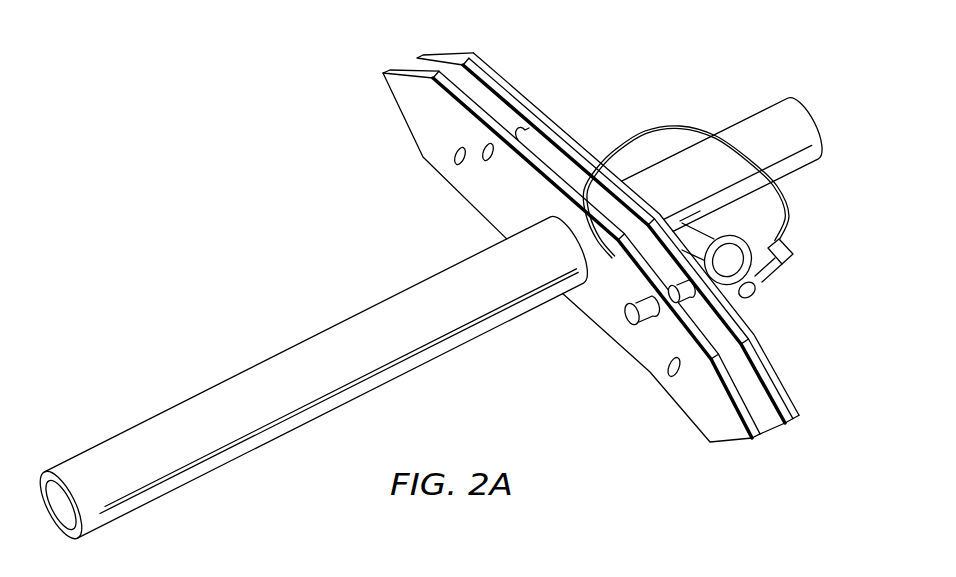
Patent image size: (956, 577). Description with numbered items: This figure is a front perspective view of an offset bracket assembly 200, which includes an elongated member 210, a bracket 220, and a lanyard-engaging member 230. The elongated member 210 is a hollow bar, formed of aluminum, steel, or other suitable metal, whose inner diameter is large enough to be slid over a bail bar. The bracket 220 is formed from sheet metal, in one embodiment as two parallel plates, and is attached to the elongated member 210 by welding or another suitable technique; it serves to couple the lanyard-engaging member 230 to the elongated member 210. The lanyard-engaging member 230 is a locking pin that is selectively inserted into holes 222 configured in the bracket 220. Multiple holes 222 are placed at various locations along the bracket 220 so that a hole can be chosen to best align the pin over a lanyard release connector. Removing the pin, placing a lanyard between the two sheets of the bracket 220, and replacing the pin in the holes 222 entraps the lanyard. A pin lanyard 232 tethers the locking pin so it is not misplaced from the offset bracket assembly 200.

The offset bracket assembly 200 is at (314, 88).
The elongated member 210 is at (275, 368).
The bracket 220 is at (678, 403).
The holes 222 is at (487, 162).
The lanyard-engaging member 230 is at (719, 236).
The pin lanyard 232 is at (669, 129).